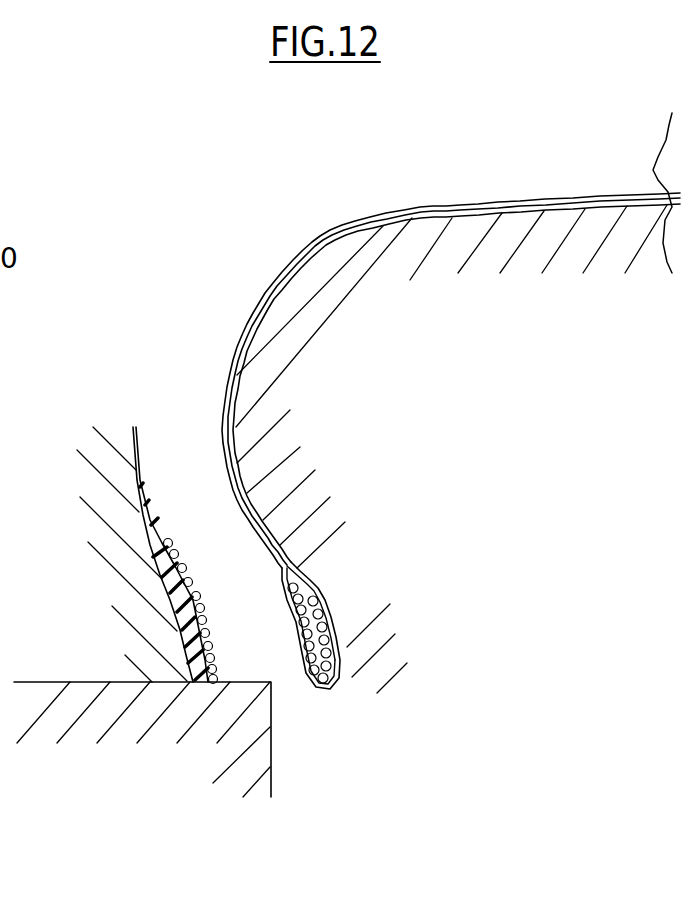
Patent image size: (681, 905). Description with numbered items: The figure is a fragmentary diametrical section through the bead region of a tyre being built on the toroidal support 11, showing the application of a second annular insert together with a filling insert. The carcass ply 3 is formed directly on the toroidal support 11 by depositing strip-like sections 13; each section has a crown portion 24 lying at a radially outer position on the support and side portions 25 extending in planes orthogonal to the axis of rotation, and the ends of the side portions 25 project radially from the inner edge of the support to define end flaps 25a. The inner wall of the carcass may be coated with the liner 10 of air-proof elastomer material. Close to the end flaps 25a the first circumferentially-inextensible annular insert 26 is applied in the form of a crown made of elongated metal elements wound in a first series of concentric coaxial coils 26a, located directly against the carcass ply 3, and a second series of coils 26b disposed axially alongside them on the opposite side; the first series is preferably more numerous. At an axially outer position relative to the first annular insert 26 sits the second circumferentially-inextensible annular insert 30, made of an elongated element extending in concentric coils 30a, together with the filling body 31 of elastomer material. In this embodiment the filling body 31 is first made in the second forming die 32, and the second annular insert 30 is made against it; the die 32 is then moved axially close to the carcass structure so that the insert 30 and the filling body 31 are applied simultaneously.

The carcass ply 3 is at (350, 221).
The crown portion 24 is at (455, 196).
The side portions 25 is at (241, 334).
The strip-like sections 13 is at (516, 188).
The toroidal support 11 is at (456, 351).
The first circumferentially-inextensible annular insert 26 is at (313, 585).
The first series of concentric coaxial coils 26a is at (341, 630).
The second series of concentric coaxial coils 26b is at (307, 679).
The end flaps 25a is at (294, 631).
The liner 10 is at (338, 684).
The second forming die 32 is at (113, 458).
The second circumferentially-inextensible annular insert 30 is at (168, 528).
The filling body 31 is at (180, 630).
The concentric coils 30a is at (203, 595).